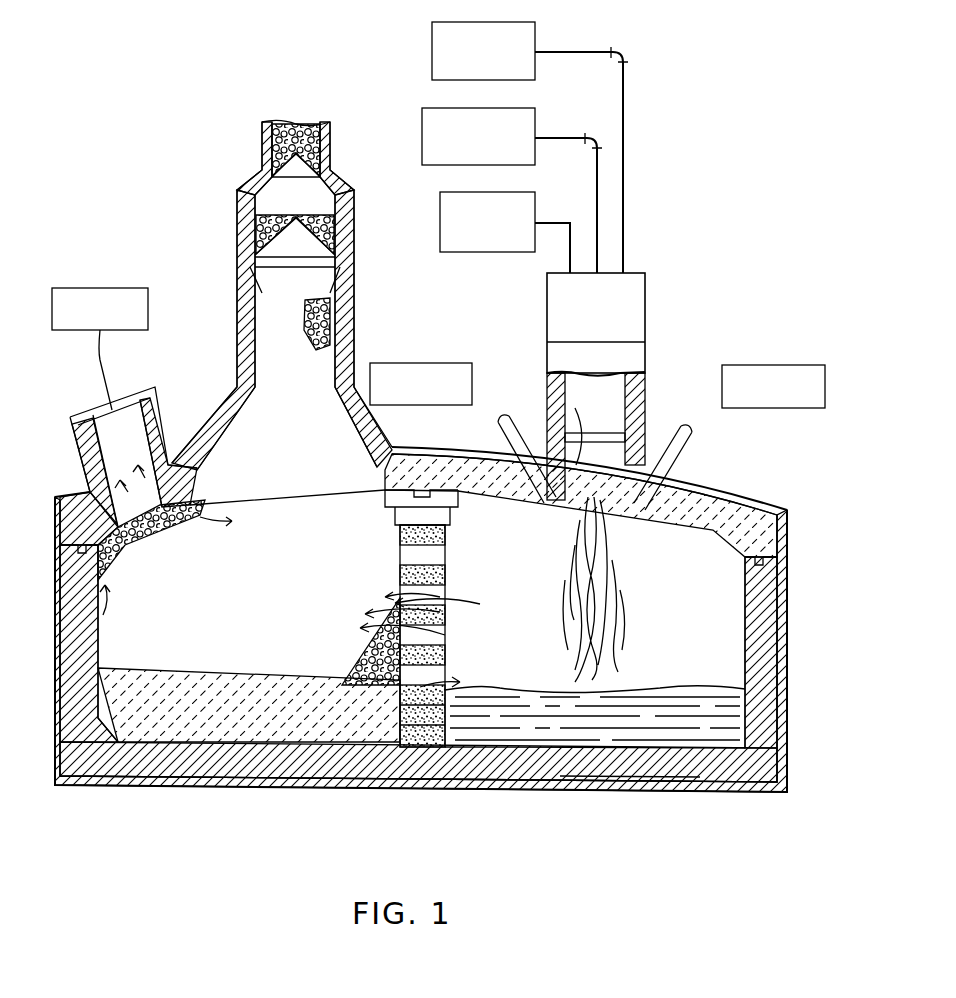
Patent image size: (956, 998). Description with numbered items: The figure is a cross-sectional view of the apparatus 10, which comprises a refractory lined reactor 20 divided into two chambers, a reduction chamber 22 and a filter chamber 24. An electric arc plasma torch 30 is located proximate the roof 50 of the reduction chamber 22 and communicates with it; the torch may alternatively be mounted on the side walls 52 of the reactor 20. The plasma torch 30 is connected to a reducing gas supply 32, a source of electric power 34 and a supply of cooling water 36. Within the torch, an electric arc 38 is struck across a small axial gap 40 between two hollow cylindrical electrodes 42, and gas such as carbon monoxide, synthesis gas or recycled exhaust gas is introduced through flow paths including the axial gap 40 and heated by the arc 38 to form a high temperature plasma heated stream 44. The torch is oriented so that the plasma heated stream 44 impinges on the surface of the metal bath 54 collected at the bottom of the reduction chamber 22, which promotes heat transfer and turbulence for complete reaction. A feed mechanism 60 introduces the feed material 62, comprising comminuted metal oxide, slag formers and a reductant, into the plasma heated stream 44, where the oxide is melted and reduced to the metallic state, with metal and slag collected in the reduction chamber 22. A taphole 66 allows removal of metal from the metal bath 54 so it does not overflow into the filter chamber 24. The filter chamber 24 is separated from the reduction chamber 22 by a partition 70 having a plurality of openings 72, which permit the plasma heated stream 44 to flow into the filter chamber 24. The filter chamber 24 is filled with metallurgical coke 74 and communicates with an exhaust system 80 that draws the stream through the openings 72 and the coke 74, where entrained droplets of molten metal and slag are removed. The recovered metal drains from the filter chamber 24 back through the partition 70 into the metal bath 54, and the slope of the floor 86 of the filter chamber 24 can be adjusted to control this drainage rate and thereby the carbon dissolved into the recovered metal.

The apparatus 10 is at (200, 826).
The refractory lined reactor 20 is at (820, 663).
The reduction chamber 22 is at (718, 669).
The filter chamber 24 is at (313, 651).
The electric arc plasma torch 30 is at (645, 302).
The reducing gas supply 32 is at (422, 151).
The source of electric power 34 is at (460, 252).
The supply of cooling water 36 is at (432, 36).
The electric arc 38 is at (583, 428).
The axial gap 40 is at (594, 443).
The hollow cylindrical electrodes 42 is at (625, 396).
The plasma heated stream 44 is at (574, 552).
The roof 50 is at (714, 487).
The side walls 52 is at (790, 592).
The metal bath 54 is at (530, 690).
The feed mechanism 60 is at (532, 402).
The feed material 62 is at (466, 348).
The taphole 66 is at (757, 740).
The partition 70 is at (447, 536).
The openings 72 is at (400, 560).
The metallurgical coke 74 is at (205, 521).
The exhaust system 80 is at (150, 316).
The floor 86 is at (196, 677).